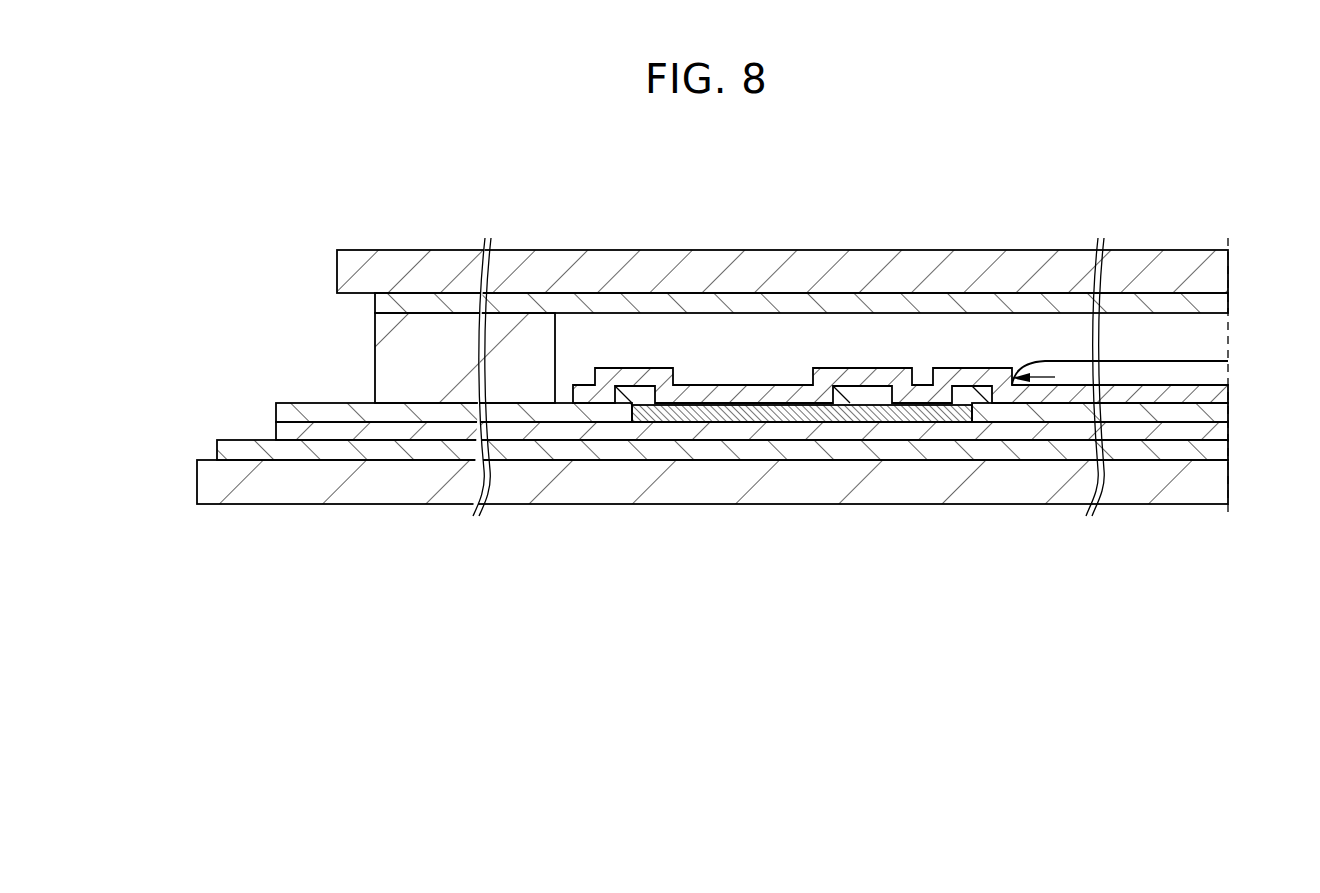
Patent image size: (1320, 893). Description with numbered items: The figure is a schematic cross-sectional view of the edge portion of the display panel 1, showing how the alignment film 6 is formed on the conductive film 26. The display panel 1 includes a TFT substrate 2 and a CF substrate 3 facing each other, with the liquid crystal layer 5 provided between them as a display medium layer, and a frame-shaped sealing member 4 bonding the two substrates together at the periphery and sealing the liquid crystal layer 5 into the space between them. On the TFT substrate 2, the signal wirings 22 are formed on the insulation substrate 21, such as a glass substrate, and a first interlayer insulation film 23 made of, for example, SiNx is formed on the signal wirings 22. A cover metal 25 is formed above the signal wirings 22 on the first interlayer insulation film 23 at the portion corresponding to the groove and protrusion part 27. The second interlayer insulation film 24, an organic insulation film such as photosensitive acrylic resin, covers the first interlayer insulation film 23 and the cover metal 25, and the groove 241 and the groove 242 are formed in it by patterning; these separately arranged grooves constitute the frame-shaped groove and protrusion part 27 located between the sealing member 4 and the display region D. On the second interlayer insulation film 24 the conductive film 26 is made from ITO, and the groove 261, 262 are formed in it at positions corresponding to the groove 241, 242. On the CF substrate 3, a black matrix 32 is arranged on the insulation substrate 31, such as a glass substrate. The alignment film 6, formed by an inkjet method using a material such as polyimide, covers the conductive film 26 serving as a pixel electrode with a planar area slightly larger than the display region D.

The display panel 1 is at (342, 208).
The TFT substrate 2 is at (340, 494).
The insulation substrate 21 is at (628, 502).
The signal wirings 22 is at (217, 450).
The first interlayer insulation film 23 is at (276, 431).
The second interlayer insulation film 24 is at (276, 405).
The groove 241 is at (703, 400).
The groove 242 is at (917, 385).
The cover metal 25 is at (790, 423).
The conductive film 26 is at (652, 370).
The groove 261 is at (790, 386).
The groove 262 is at (930, 382).
The groove and protrusion part 27 is at (710, 198).
The CF substrate 3 is at (516, 258).
The insulation substrate 31 is at (590, 262).
The black matrix 32 is at (1012, 290).
The sealing member 4 is at (378, 358).
The liquid crystal layer 5 is at (630, 327).
The alignment film 6 is at (1066, 368).
The display region D is at (1241, 376).